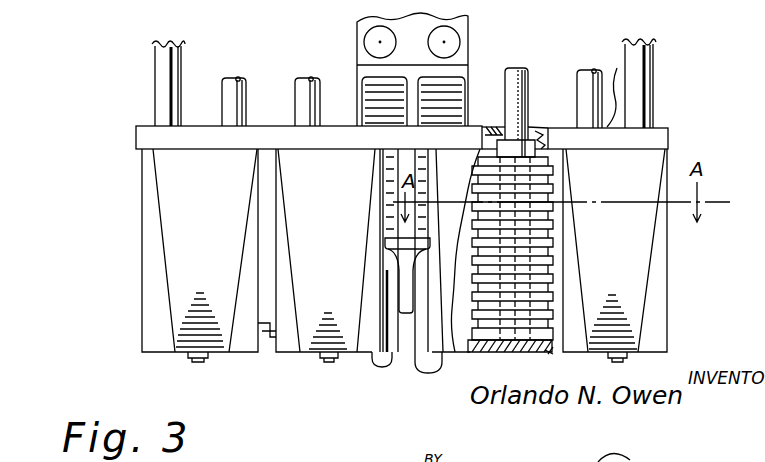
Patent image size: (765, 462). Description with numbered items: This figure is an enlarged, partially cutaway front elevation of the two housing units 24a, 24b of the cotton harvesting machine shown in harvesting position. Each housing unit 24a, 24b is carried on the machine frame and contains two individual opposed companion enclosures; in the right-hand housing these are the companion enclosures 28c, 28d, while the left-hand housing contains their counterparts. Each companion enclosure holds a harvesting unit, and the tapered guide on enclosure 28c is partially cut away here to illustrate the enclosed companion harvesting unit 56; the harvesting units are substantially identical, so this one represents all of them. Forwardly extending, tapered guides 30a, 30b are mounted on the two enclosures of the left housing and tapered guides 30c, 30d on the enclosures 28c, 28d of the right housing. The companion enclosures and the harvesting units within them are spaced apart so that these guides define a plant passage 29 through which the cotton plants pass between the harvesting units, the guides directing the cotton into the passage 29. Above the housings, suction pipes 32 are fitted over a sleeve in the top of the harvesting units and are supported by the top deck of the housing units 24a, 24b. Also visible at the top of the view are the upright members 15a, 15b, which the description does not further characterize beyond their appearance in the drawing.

The first conductor post 15a is at (153, 76).
The second conductor post 15b is at (645, 74).
The housing unit 24a is at (134, 137).
The housing unit 24b is at (672, 133).
The suction pipes 32 is at (306, 78).
The companion enclosure 28c is at (486, 126).
The companion enclosure 28d is at (568, 60).
The harvesting unit 56 is at (552, 196).
The tapered guide 30a is at (180, 356).
The tapered guide 30b is at (300, 355).
The tapered guide 30c is at (470, 356).
The tapered guide 30d is at (632, 360).
The plant passage 29 is at (271, 364).